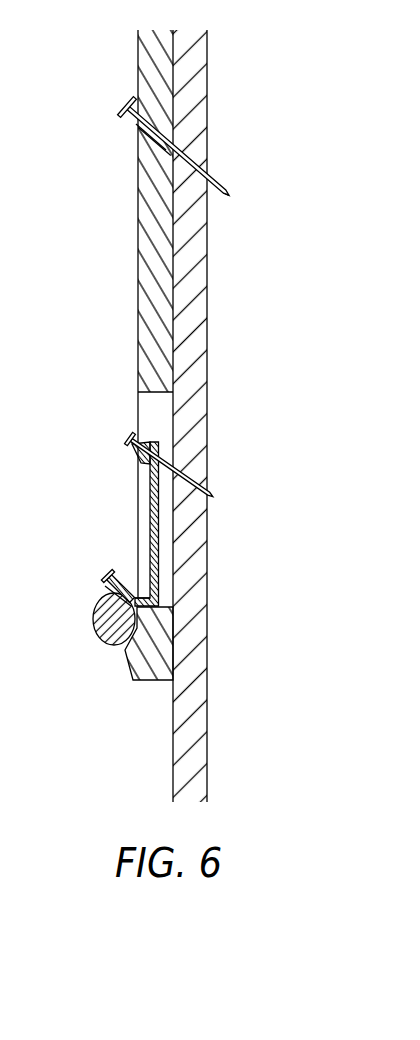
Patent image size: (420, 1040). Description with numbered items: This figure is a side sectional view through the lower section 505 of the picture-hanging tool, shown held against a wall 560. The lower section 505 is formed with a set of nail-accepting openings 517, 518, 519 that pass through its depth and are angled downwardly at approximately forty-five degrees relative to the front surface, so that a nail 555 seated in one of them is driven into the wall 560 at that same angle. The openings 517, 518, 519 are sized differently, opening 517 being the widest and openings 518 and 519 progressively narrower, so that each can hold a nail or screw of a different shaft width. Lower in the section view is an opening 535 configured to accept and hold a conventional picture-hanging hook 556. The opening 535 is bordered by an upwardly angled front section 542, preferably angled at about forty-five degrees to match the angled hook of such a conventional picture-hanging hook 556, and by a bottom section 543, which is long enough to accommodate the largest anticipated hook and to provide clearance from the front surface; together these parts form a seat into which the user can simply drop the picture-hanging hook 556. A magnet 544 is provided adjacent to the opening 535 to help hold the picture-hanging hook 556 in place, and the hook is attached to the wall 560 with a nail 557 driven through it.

The lower section 505 is at (138, 350).
The opening 517 is at (147, 98).
The opening 518 is at (140, 134).
The opening 519 is at (153, 152).
The nail 555 is at (225, 184).
The opening 535 is at (142, 412).
The picture-hanging hook 556 is at (150, 513).
The nail 557 is at (213, 498).
The upwardly angled front section 542 is at (104, 580).
The bottom section 543 is at (135, 598).
The magnet 544 is at (110, 634).
The wall 560 is at (193, 640).